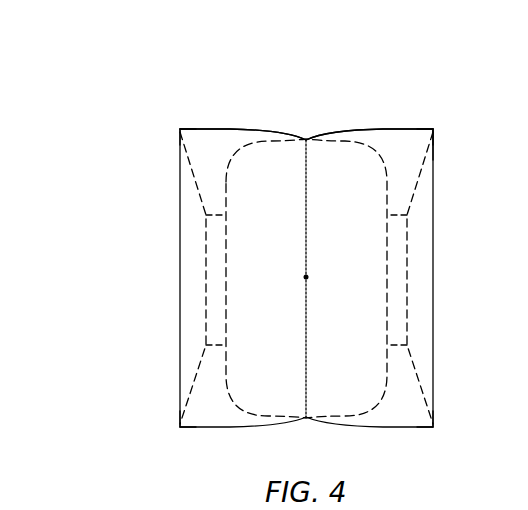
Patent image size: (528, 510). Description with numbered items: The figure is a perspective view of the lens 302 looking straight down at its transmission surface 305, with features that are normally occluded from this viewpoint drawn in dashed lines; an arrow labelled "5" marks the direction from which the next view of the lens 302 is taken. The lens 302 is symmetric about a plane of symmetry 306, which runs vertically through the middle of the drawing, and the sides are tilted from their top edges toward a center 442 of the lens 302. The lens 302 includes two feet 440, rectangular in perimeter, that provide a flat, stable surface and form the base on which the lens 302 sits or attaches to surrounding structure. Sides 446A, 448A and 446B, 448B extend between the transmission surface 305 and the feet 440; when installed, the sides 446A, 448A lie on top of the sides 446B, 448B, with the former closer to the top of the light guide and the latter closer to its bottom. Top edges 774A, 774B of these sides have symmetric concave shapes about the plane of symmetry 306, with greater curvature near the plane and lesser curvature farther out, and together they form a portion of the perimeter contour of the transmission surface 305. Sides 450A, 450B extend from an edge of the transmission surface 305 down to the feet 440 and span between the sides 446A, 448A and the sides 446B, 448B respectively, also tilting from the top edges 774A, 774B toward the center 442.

The lens 302 is at (119, 105).
The arrow labelled "5" 5 is at (435, 96).
The transmission surface 305 is at (257, 355).
The plane of symmetry 306 is at (312, 228).
The feet 440 is at (174, 295).
The center 442 is at (309, 277).
The side 446A is at (180, 134).
The side 446B is at (433, 138).
The side 448A is at (180, 420).
The side 448B is at (433, 420).
The side 450A is at (180, 225).
The side 450B is at (432, 232).
The top edge 774A is at (210, 129).
The top edge 774B is at (377, 112).